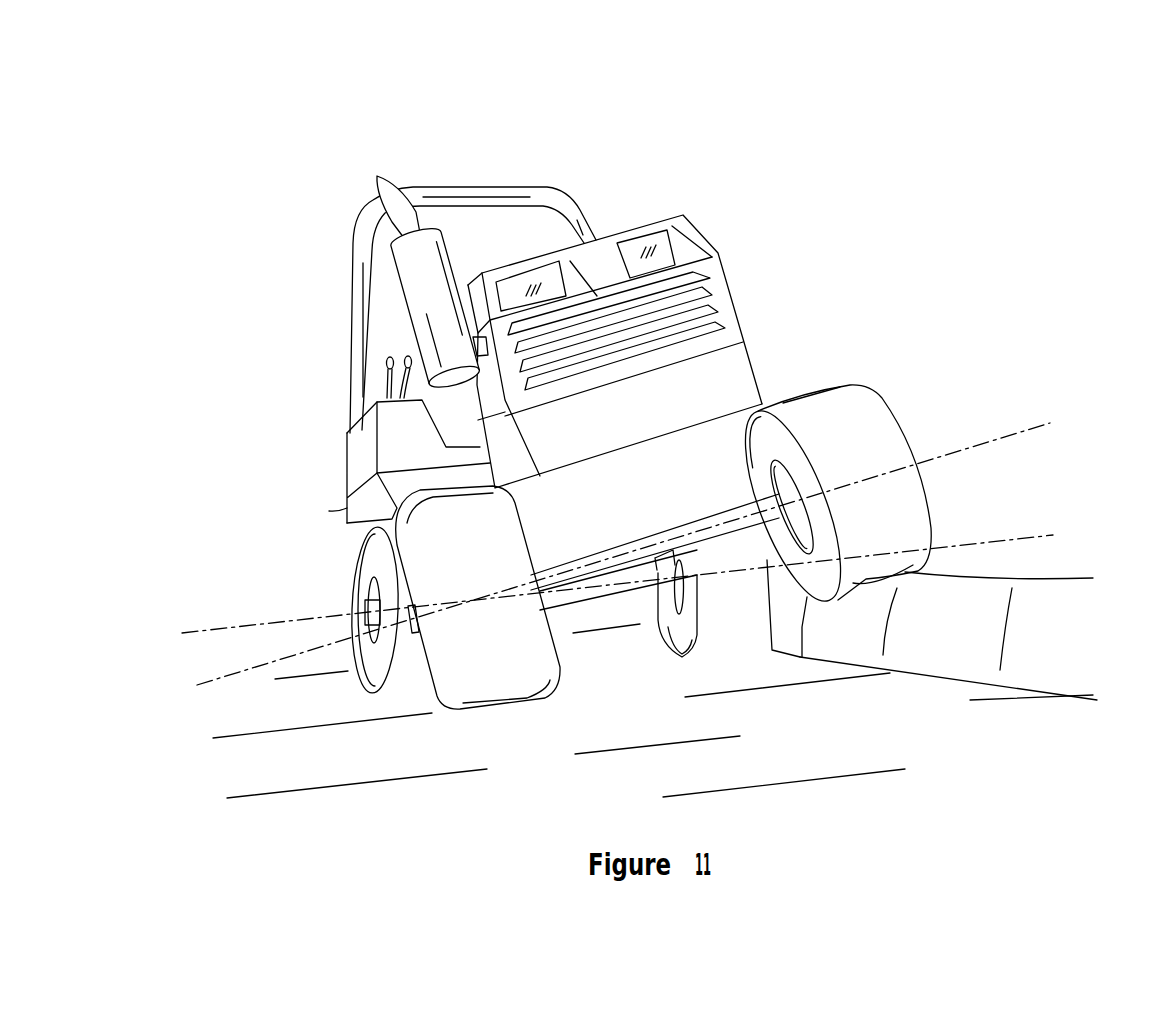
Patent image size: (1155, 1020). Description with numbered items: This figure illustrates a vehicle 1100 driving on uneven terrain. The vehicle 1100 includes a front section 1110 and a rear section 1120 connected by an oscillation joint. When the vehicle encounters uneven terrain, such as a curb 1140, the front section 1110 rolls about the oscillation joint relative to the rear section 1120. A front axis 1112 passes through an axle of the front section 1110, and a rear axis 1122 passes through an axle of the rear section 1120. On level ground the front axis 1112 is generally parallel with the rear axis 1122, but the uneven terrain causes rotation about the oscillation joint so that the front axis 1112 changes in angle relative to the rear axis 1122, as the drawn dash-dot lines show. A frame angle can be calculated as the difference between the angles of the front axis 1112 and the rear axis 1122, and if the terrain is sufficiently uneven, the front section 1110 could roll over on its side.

The vehicle 1100 is at (268, 163).
The front section 1110 is at (644, 226).
The front axis 1112 is at (210, 681).
The rear section 1120 is at (350, 504).
The rear axis 1122 is at (200, 628).
The curb 1140 is at (957, 652).